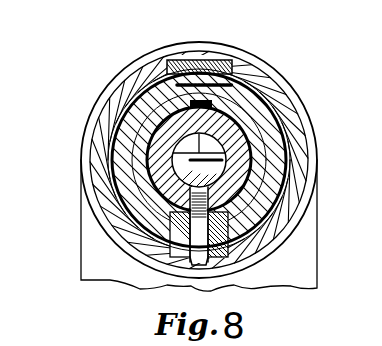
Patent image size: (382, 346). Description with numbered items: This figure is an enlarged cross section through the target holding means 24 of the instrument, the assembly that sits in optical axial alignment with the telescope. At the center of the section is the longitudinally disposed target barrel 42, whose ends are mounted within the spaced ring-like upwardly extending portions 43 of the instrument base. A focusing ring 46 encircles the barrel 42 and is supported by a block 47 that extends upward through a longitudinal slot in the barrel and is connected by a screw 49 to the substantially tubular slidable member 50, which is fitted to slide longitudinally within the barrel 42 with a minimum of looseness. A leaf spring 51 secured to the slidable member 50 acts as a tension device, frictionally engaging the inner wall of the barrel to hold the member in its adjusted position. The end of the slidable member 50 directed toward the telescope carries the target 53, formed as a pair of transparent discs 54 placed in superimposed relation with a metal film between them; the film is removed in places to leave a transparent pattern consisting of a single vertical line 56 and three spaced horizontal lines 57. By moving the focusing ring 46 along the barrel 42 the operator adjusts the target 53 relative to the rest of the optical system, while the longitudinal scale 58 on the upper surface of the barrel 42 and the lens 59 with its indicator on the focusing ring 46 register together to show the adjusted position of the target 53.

The target holding means 24 is at (283, 75).
The target barrel 42 is at (289, 237).
The ring-like upwardly extending portions 43 is at (291, 95).
The focusing ring 46 is at (288, 216).
The block 47 is at (224, 253).
The screw 49 is at (212, 272).
The slidable member 50 is at (243, 136).
The leaf spring 51 is at (175, 86).
The target 53 is at (256, 182).
The transparent discs 54 is at (240, 152).
The vertical line 56 is at (222, 150).
The horizontal lines 57 is at (176, 161).
The longitudinal scale 58 is at (233, 60).
The lens 59 is at (209, 58).